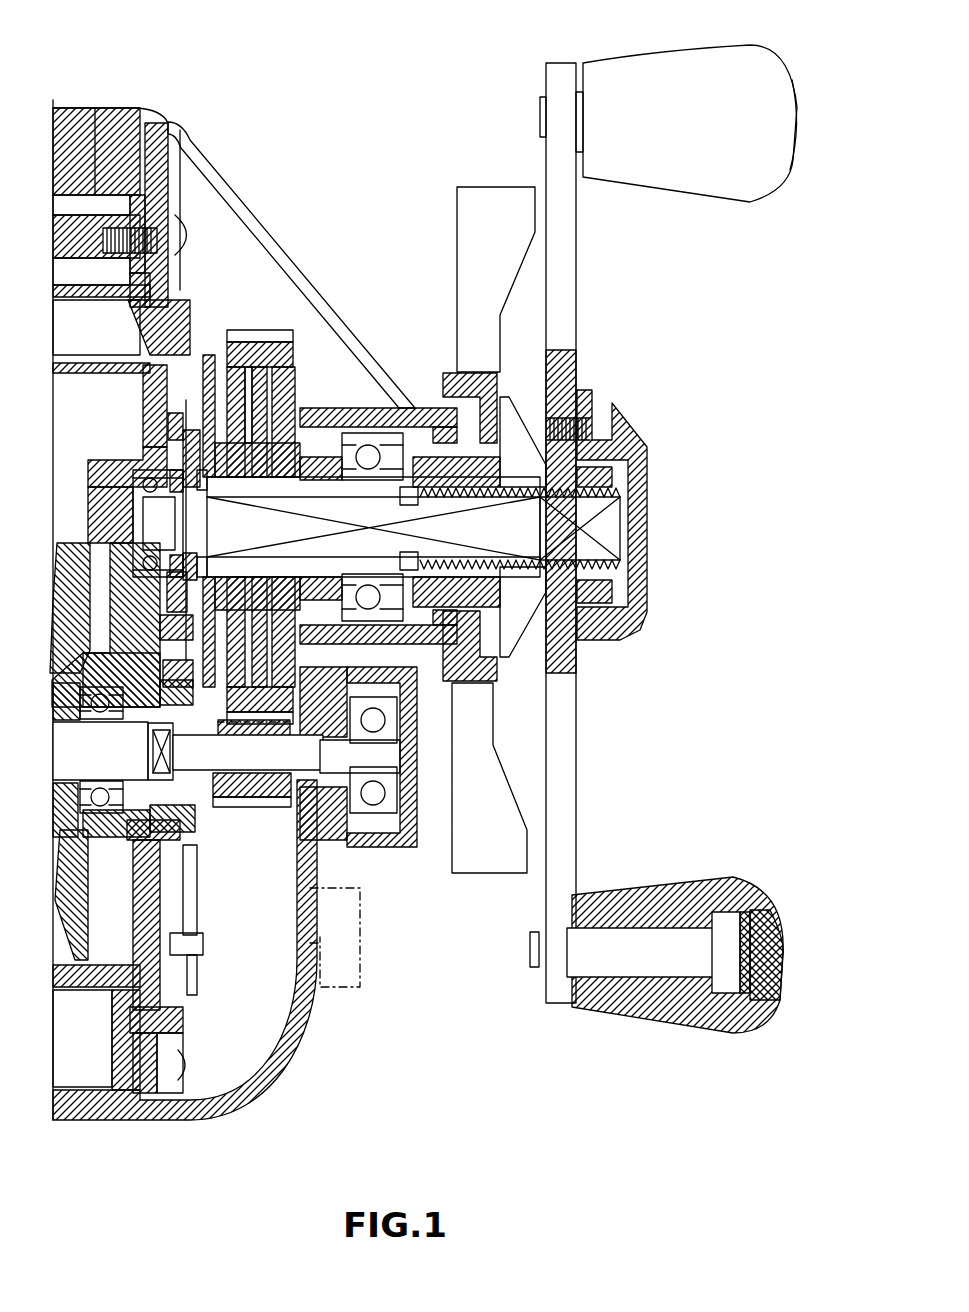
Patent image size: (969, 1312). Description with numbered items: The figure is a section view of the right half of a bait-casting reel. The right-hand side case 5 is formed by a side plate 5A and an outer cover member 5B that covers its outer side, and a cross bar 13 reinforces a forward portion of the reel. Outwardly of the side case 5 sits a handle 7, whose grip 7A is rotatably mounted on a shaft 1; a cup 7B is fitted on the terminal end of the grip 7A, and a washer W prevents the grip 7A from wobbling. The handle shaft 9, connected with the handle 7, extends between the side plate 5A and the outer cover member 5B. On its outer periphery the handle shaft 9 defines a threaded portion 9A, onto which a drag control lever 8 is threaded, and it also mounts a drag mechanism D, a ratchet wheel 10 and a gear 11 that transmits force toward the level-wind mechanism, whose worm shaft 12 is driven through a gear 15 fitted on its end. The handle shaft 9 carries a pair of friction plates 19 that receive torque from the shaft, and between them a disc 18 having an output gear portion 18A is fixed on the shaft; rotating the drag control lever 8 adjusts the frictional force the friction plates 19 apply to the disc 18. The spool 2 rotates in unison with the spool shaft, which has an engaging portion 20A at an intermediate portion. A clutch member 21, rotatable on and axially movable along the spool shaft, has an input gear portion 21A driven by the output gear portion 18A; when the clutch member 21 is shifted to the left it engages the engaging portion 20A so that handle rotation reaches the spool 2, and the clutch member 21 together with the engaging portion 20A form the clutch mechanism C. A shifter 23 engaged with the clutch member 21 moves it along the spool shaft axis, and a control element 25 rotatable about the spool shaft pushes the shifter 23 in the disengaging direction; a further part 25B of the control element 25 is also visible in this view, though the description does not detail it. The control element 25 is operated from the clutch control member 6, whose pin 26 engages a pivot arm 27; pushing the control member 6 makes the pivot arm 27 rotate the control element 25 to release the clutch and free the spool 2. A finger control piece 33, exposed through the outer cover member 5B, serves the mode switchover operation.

The shaft 1 is at (545, 118).
The spool 2 is at (70, 578).
The right-hand side case 5 is at (283, 68).
The side plate 5A is at (152, 124).
The outer cover member 5B is at (222, 165).
The clutch control member 6 is at (65, 1122).
The handle 7 is at (573, 264).
The grip 7A is at (710, 198).
The cup 7B is at (797, 165).
The drag control lever 8 is at (487, 188).
The handle shaft 9 is at (612, 527).
The threaded portion 9A is at (520, 592).
The ratchet wheel 10 is at (210, 355).
The gear 11 is at (150, 424).
The worm shaft 12 is at (96, 327).
The cross bar 13 is at (88, 198).
The gear 15 is at (187, 282).
The disc 18 is at (263, 475).
The output gear portion 18A is at (237, 412).
The friction plates 19 is at (238, 342).
The engaging portion 20A is at (150, 752).
The clutch member 21 is at (142, 675).
The input gear portion 21A is at (325, 847).
The shifter 23 is at (208, 790).
The control element 25 is at (172, 848).
The lever rod 25B is at (198, 915).
The pin 26 is at (183, 1020).
The pivot arm 27 is at (200, 957).
The finger control piece 33 is at (362, 943).
The clutch mechanism C is at (150, 800).
The drag mechanism D is at (303, 392).
The washer W is at (740, 995).